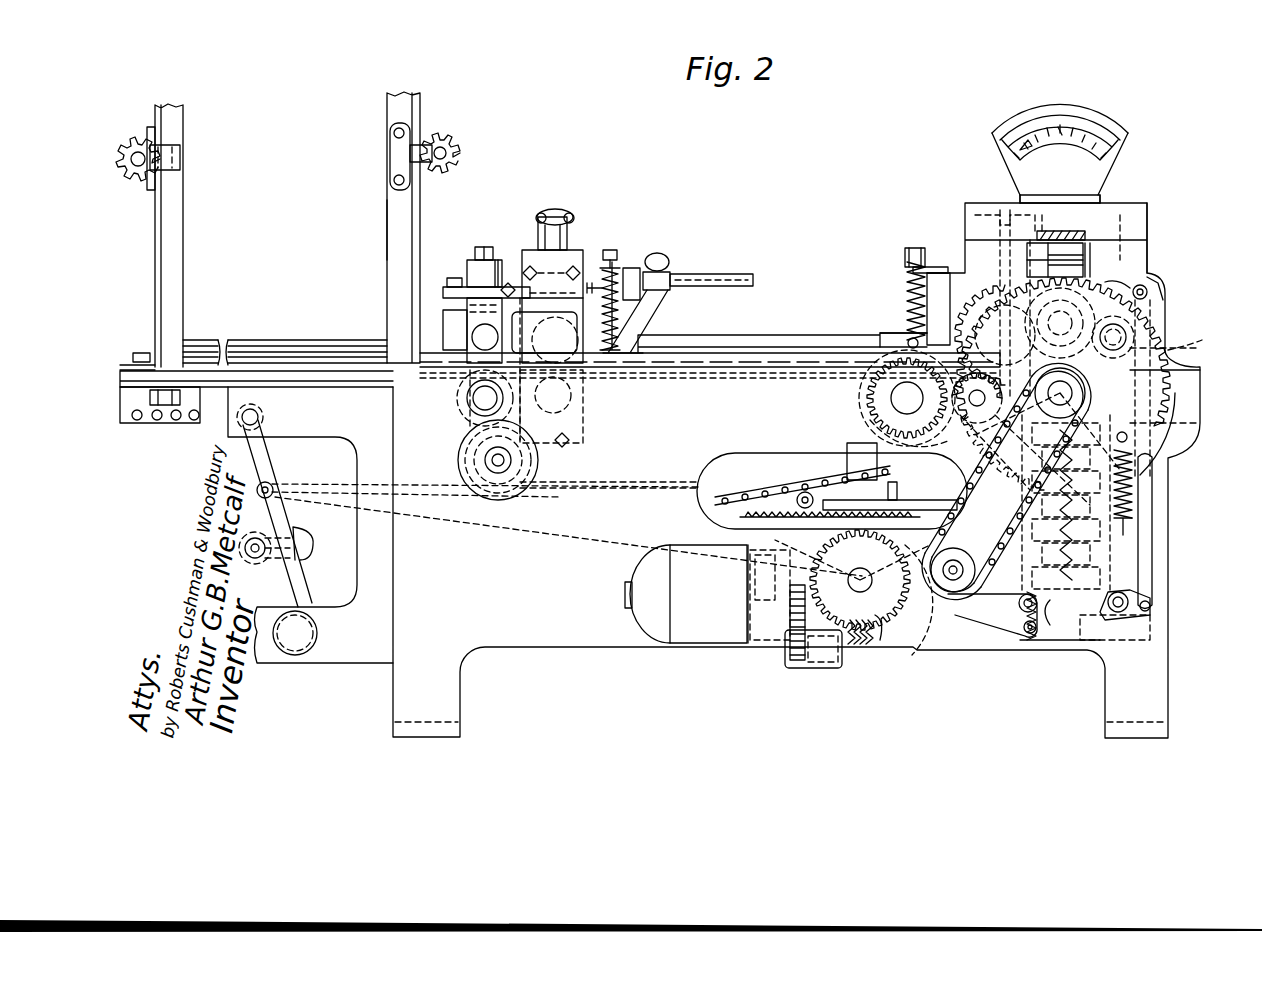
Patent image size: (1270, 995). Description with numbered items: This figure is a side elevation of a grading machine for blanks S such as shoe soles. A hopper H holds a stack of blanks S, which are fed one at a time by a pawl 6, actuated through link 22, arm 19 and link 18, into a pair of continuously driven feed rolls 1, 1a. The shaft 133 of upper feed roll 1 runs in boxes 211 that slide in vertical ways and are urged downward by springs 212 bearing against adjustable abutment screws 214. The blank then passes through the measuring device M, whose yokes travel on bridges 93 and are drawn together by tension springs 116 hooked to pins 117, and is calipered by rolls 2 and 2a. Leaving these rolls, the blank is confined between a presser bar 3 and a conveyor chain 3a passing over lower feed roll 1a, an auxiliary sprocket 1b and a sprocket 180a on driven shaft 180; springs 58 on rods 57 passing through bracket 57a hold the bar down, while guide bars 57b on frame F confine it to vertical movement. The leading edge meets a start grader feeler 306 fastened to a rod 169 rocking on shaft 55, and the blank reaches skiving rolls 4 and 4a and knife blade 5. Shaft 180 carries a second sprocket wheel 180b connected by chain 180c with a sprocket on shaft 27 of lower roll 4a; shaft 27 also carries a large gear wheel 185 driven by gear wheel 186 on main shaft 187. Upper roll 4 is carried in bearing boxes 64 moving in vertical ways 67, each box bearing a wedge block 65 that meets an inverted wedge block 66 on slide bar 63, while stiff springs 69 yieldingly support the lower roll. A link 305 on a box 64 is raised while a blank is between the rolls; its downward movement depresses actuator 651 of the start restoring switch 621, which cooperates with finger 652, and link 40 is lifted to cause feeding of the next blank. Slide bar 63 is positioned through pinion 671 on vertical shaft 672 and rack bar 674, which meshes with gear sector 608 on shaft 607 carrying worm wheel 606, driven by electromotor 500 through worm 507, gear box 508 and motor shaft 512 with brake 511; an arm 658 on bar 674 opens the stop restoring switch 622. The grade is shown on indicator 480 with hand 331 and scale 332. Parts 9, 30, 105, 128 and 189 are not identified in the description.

The feed roll 1 is at (445, 322).
The lower feed roll 1a is at (470, 412).
The auxiliary sprocket 1b is at (485, 457).
The calipering roll 2 is at (545, 369).
The calipering roll 2a is at (575, 385).
The presser bar 3 is at (710, 352).
The conveyor chain 3a is at (675, 375).
The upper skiving roll 4 is at (1150, 280).
The lower skiving roll 4a is at (1070, 400).
The knife blade 5 is at (1165, 348).
The pawl 6 is at (133, 420).
The post 9 is at (415, 227).
The link 18 is at (165, 420).
The arm 19 is at (280, 463).
The link 22 is at (560, 530).
The shaft 27 is at (1070, 392).
The link 30 is at (946, 618).
The link 40 is at (1145, 558).
The shaft 55 is at (635, 262).
The rod 57 is at (612, 250).
The bracket 57a is at (612, 262).
The guide bar 57b is at (935, 318).
The spring 58 is at (905, 280).
The slide bar 63 is at (1068, 231).
The bearing box 64 is at (1100, 282).
The wedge block 65 is at (1065, 268).
The inverted wedge block 66 is at (1090, 260).
The vertical ways 67 is at (1065, 255).
The spring 69 is at (1085, 530).
The bridge 93 is at (565, 253).
The solenoid 105 is at (550, 212).
The tension spring 116 is at (510, 283).
The pin 117 is at (640, 260).
The plate 128 is at (565, 222).
The shaft 133 is at (445, 335).
The rod 169 is at (705, 275).
The driven shaft 180 is at (1063, 384).
The sprocket 180a is at (1000, 320).
The second sprocket wheel 180b is at (882, 417).
The chain 180c is at (1020, 290).
The large gear wheel 185 is at (1160, 345).
The gear wheel 186 is at (880, 386).
The main shaft 187 is at (907, 398).
The gear 189 is at (1021, 439).
The box 211 is at (470, 378).
The spring 212 is at (450, 317).
The adjustable abutment screw 214 is at (487, 262).
The link 305 is at (1006, 482).
The start grader feeler 306 is at (660, 300).
The hand 331 is at (1033, 130).
The scale 332 is at (1065, 125).
The electrically operated indicator 480 is at (1060, 153).
The electromotor 500 is at (686, 594).
The worm 507 is at (870, 630).
The gear box 508 is at (820, 660).
The brake 511 is at (745, 640).
The motor shaft 512 is at (795, 605).
The worm wheel 606 is at (882, 610).
The shaft 607 is at (852, 580).
The gear sector 608 is at (910, 655).
The start restoring switch 621 is at (1135, 635).
The stop restoring switch 622 is at (830, 487).
The actuator 651 is at (1150, 600).
The finger 652 is at (1130, 560).
The arm 658 is at (832, 491).
The pinion 671 is at (805, 485).
The vertical shaft 672 is at (1005, 255).
The rack bar 674 is at (770, 485).
The frame F is at (572, 635).
The hopper H is at (288, 229).
The blank S is at (253, 340).
The measuring device M is at (985, 151).